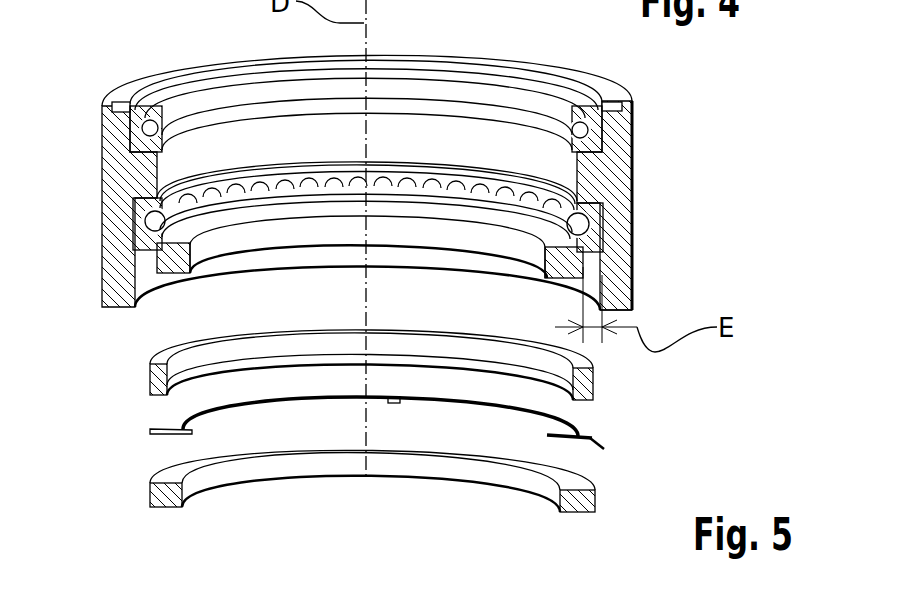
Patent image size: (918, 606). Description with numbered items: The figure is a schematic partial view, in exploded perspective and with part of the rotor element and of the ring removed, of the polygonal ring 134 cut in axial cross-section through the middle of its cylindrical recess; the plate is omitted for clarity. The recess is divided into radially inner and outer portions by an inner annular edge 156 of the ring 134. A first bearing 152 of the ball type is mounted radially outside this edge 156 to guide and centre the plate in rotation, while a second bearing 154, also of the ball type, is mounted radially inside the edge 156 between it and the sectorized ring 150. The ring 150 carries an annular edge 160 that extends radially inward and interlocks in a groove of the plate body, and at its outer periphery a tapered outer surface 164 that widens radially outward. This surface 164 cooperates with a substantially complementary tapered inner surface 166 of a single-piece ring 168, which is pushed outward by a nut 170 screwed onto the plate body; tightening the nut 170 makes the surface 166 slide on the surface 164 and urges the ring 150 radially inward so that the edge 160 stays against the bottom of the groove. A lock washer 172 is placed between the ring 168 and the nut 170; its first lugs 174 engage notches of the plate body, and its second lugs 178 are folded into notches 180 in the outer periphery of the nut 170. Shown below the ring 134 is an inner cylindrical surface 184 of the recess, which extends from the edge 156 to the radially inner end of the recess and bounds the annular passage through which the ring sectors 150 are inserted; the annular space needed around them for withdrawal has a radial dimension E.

The polygonal ring 134 is at (354, 162).
The ring 150 is at (155, 254).
The first bearing 152 is at (163, 110).
The second bearing 154 is at (350, 221).
The inner annular edge 156 is at (137, 171).
The annular edge 160 is at (215, 250).
The tapered outer surface 164 is at (637, 297).
The tapered inner surface 166 is at (593, 366).
The single-piece ring 168 is at (353, 366).
The nut 170 is at (351, 495).
The lock washer 172 is at (358, 438).
The first lugs 174 is at (391, 403).
The second lugs 178 is at (604, 447).
The notches 180 is at (150, 505).
The inner cylindrical surface 184 is at (582, 238).